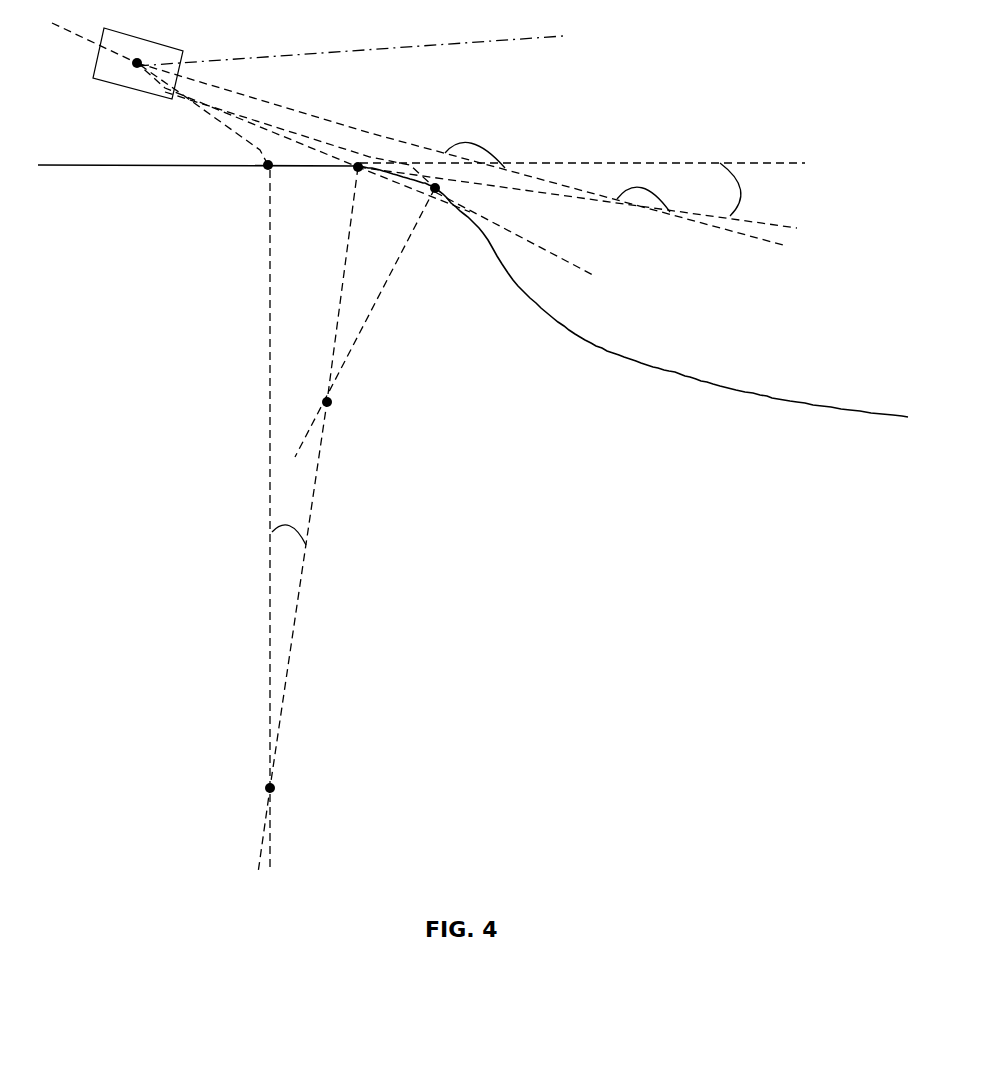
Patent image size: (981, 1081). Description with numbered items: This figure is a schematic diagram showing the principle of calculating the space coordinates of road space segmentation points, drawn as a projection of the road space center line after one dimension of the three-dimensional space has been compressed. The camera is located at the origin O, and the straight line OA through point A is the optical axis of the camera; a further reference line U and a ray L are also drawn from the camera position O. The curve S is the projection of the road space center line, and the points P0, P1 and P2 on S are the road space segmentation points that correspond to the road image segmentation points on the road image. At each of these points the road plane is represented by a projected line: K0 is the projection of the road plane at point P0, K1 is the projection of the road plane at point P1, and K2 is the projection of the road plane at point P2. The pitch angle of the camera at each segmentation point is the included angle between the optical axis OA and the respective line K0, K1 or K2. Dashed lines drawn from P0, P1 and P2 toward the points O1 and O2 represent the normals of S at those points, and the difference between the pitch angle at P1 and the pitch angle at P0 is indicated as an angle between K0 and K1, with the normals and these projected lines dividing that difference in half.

The camera optical center O is at (130, 58).
The reference axis of light source U is at (350, 43).
The optical axis end point A is at (460, 154).
The light ray to P0 L is at (204, 115).
The projection of the road space center line S is at (473, 291).
The projection of the road plane at point P0 K0 is at (582, 149).
The projection of the road plane at point P1 K1 is at (589, 202).
The projection of the road plane at point P2 K2 is at (521, 233).
The road space segmentation point P0 is at (258, 515).
The road space segmentation point P1 is at (310, 517).
The road space segmentation point P2 is at (372, 320).
The normal intersection point O1 is at (280, 780).
The center of curvature O2 is at (339, 401).